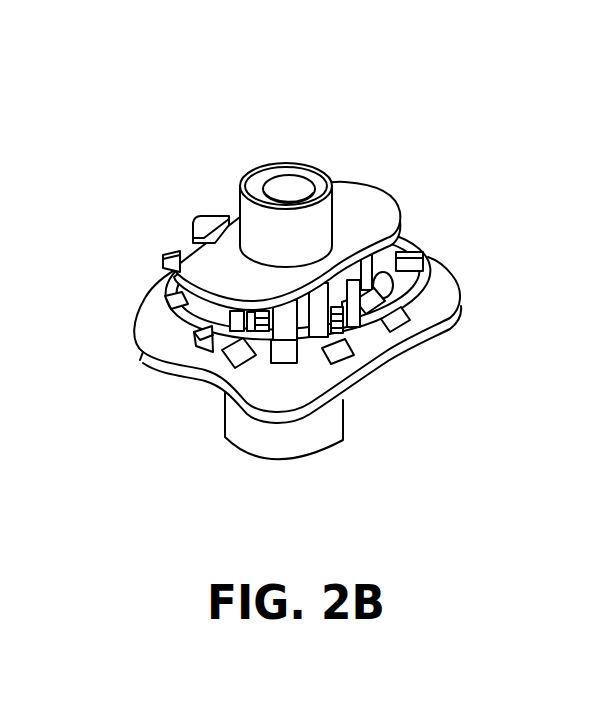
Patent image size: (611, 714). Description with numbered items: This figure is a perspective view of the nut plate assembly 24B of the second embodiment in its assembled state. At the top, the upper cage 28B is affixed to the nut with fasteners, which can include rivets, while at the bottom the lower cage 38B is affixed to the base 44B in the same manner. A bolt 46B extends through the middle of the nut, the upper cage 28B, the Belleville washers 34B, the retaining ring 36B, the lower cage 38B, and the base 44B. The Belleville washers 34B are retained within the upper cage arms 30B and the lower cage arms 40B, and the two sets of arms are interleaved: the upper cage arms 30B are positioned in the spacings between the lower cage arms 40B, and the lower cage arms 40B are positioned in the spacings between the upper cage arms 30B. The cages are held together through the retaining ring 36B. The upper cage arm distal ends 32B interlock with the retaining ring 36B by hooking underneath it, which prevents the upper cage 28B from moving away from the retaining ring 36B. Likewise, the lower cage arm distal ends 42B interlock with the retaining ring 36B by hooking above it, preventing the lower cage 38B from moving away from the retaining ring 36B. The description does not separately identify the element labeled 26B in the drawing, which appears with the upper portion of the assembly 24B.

The nut plate assembly 24B is at (266, 130).
The top plate with boss 26B is at (350, 206).
The upper cage 28B is at (194, 216).
The upper cage arms 30B is at (306, 316).
The upper cage arm distal ends 32B is at (349, 367).
The Belleville washers 34B is at (350, 271).
The retaining ring 36B is at (218, 316).
The lower cage 38B is at (186, 326).
The lower cage arms 40B is at (368, 341).
The lower cage arm distal ends 42B is at (402, 292).
The base 44B is at (413, 373).
The bolt 46B is at (349, 467).